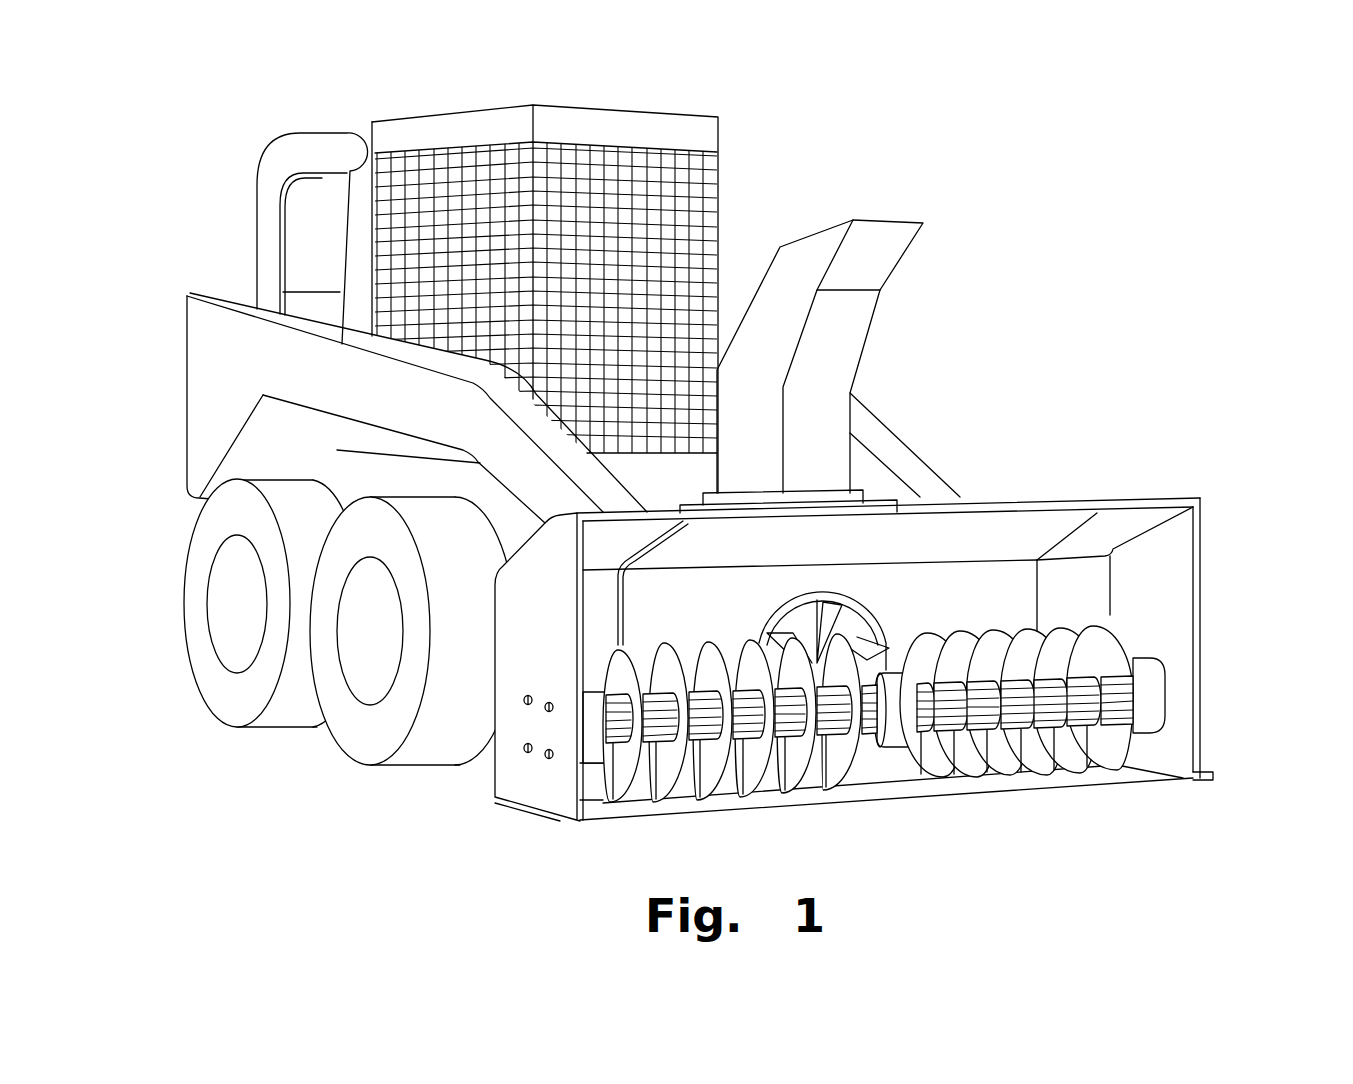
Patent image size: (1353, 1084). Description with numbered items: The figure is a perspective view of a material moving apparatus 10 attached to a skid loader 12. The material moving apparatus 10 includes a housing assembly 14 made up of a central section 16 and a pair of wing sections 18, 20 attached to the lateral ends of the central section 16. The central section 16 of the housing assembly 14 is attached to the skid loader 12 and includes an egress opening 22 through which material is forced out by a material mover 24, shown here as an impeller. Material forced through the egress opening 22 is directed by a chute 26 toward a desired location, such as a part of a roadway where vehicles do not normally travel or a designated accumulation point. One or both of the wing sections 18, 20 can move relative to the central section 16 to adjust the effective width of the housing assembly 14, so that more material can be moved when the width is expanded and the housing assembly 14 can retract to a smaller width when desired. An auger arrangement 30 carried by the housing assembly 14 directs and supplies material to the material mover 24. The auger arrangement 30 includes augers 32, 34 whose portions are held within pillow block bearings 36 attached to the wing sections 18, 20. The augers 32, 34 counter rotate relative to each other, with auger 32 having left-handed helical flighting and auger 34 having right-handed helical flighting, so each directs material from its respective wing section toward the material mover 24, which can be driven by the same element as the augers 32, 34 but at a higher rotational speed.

The material moving apparatus 10 is at (1078, 353).
The skid loader 12 is at (217, 297).
The housing assembly 14 is at (885, 500).
The central section 16 is at (993, 510).
The wing section 18 is at (503, 777).
The wing section 20 is at (1203, 643).
The egress opening 22 is at (857, 628).
The material mover 24 is at (870, 615).
The chute 26 is at (862, 318).
The auger arrangement 30 is at (890, 772).
The auger 32 is at (687, 647).
The auger 34 is at (1047, 630).
The pillow block bearings 36 is at (595, 745).